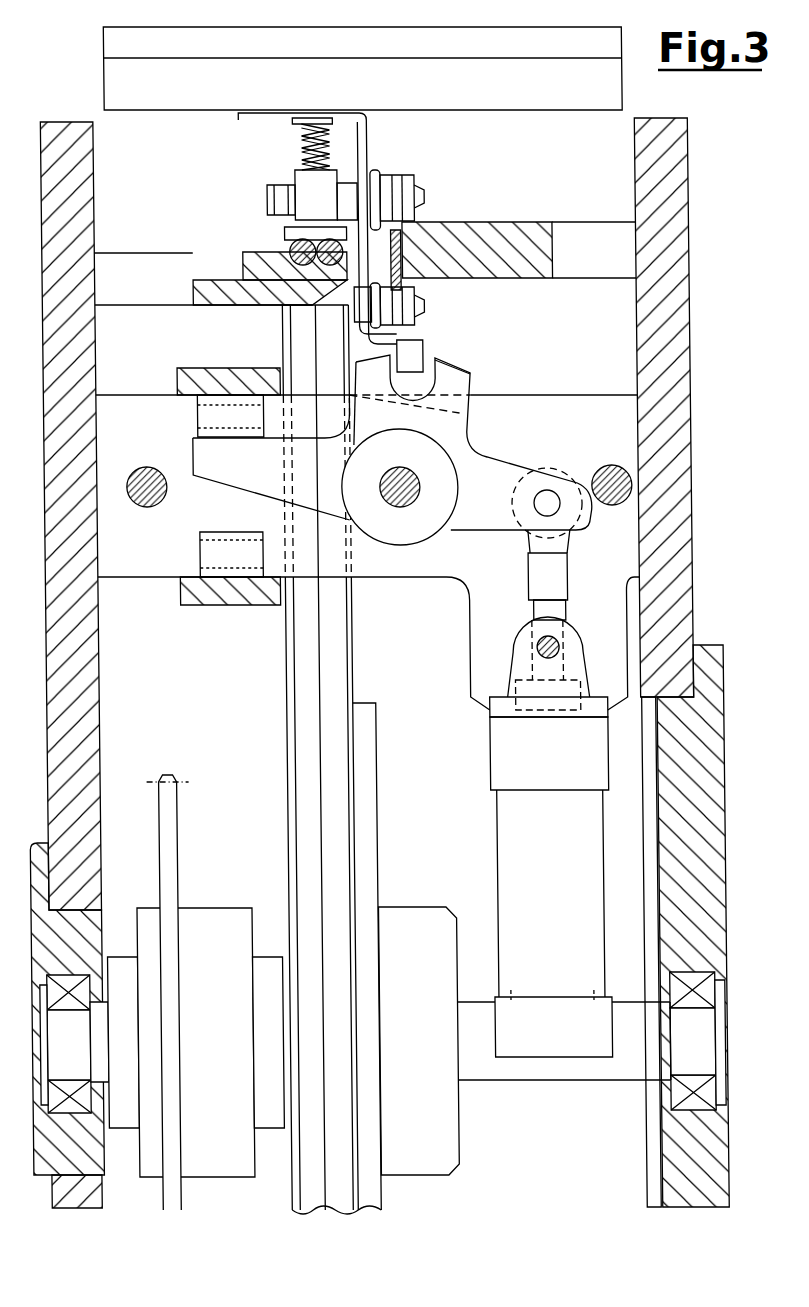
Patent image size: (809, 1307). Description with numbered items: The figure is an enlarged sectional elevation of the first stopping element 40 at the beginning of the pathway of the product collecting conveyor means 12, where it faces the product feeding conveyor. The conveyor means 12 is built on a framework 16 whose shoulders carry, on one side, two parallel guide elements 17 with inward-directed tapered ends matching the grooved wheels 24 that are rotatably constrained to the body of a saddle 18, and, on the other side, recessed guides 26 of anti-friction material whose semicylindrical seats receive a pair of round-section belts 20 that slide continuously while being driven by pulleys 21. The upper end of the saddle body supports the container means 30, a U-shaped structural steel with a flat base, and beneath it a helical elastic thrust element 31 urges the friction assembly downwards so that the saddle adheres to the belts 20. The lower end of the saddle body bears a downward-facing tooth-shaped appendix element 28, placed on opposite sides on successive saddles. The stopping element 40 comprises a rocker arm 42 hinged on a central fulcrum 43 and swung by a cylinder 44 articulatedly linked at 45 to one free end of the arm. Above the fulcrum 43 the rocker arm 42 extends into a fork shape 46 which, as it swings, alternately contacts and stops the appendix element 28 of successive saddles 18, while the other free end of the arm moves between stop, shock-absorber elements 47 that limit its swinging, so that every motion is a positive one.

The product collecting conveyor means 12 is at (80, 88).
The framework 16 is at (80, 167).
The guide elements 17 is at (398, 240).
The saddle 18 is at (379, 153).
The belts 20 is at (299, 246).
The pulleys 21 is at (298, 712).
The wheels 24 is at (412, 178).
The recessed guides 26 is at (262, 258).
The tooth-shaped appendix element 28 is at (406, 362).
The container means 30 is at (500, 94).
The elastic thrust element 31 is at (300, 148).
The stopping element 40 is at (488, 425).
The rocker arm 42 is at (266, 486).
The central fulcrum 43 is at (406, 496).
The cylinder 44 is at (512, 834).
The articulated link 45 is at (545, 494).
The fork shape 46 is at (446, 373).
The stop, shock-absorber elements 47 is at (198, 418).